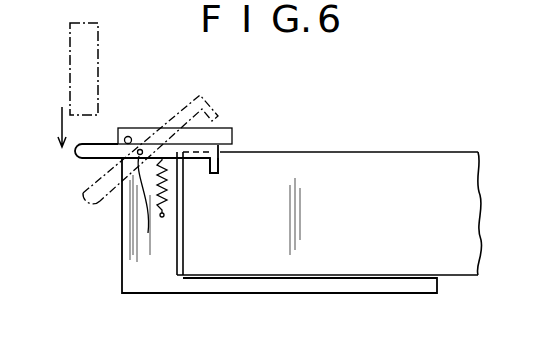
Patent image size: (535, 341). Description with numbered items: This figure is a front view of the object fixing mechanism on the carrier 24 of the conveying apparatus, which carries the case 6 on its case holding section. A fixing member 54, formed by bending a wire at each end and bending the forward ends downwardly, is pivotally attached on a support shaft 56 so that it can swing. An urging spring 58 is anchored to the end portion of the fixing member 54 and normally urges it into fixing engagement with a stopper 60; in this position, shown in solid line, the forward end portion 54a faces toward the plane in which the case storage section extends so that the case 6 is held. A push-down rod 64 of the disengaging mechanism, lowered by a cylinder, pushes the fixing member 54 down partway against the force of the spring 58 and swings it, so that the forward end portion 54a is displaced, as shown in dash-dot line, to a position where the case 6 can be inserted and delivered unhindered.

The case 6 is at (385, 152).
The carrier 24 is at (155, 286).
The fixing member 54 is at (80, 163).
The forward end portion 54a is at (213, 100).
The support shaft 56 is at (152, 207).
The urging spring 58 is at (167, 192).
The stopper 60 is at (128, 136).
The push-down rod 64 is at (98, 27).